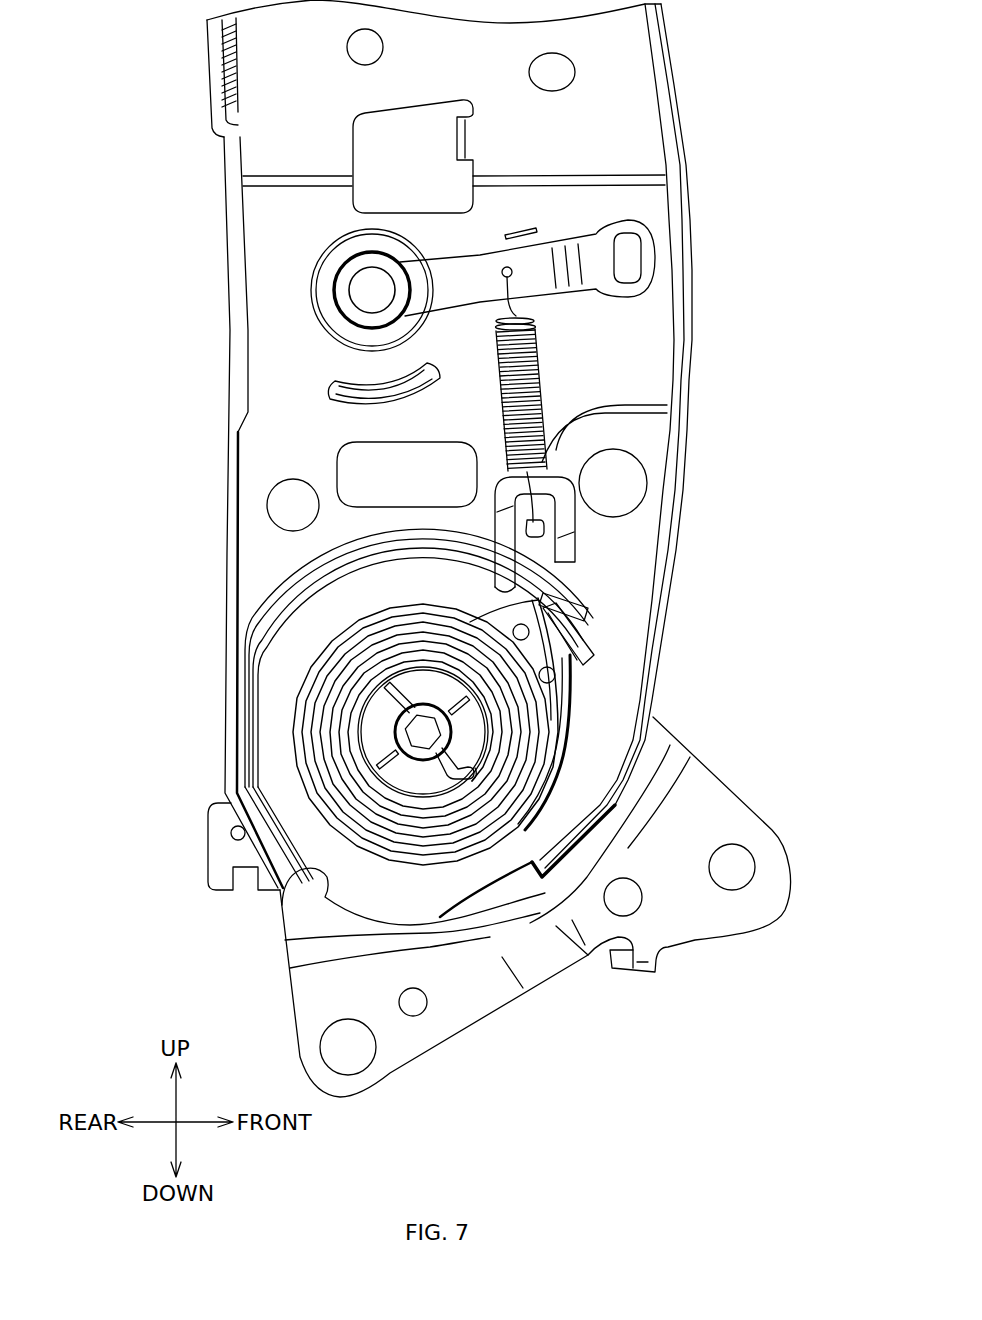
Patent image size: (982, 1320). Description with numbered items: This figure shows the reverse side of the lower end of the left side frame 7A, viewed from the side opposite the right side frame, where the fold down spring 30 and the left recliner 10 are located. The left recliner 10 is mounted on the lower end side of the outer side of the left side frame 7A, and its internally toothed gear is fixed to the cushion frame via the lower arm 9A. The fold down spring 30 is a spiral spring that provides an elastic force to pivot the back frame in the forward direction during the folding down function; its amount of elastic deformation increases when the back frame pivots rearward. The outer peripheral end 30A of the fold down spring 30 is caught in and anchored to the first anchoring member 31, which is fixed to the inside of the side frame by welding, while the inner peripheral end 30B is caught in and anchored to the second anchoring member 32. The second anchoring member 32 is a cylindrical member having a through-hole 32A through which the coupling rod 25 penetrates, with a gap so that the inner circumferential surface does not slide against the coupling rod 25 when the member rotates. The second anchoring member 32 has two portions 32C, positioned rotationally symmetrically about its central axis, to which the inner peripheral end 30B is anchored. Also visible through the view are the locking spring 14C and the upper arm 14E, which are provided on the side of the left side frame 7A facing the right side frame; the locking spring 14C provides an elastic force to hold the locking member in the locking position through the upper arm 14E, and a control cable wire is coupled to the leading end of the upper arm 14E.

The left side frame 7A is at (708, 218).
The upper arm 14E is at (565, 240).
The locking spring 14C is at (540, 389).
The fold down spring 30 is at (583, 731).
The outer peripheral end 30A is at (548, 597).
The inner peripheral end 30B is at (452, 776).
The first anchoring member 31 is at (573, 633).
The second anchoring member 32 is at (436, 808).
The through-hole 32A is at (415, 748).
The portions 32C is at (388, 688).
The coupling rod 25 is at (420, 722).
The left recliner 10 is at (706, 762).
The lower arm 9A is at (567, 963).